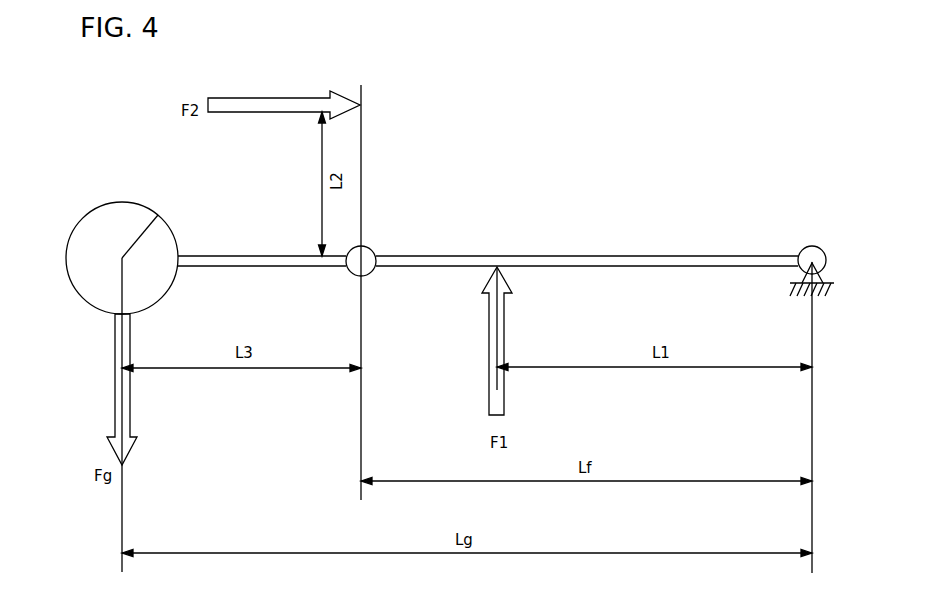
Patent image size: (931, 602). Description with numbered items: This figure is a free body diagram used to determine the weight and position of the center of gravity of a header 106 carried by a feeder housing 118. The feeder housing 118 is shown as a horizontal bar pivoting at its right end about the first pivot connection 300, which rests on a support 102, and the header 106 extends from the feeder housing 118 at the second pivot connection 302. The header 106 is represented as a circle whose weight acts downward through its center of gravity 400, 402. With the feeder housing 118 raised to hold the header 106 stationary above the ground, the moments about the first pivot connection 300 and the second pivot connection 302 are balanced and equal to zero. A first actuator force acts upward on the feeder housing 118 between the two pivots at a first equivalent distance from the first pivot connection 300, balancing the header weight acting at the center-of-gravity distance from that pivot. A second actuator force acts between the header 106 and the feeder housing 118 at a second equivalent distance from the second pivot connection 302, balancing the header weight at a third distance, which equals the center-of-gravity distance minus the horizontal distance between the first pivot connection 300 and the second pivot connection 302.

The header center of gravity 400 is at (98, 220).
The center of gravity 402 is at (158, 215).
The header 106 is at (240, 262).
The second pivot connection 302 is at (372, 250).
The feeder housing 118 is at (578, 256).
The first pivot connection 300 is at (818, 247).
The support / base 102 is at (816, 294).